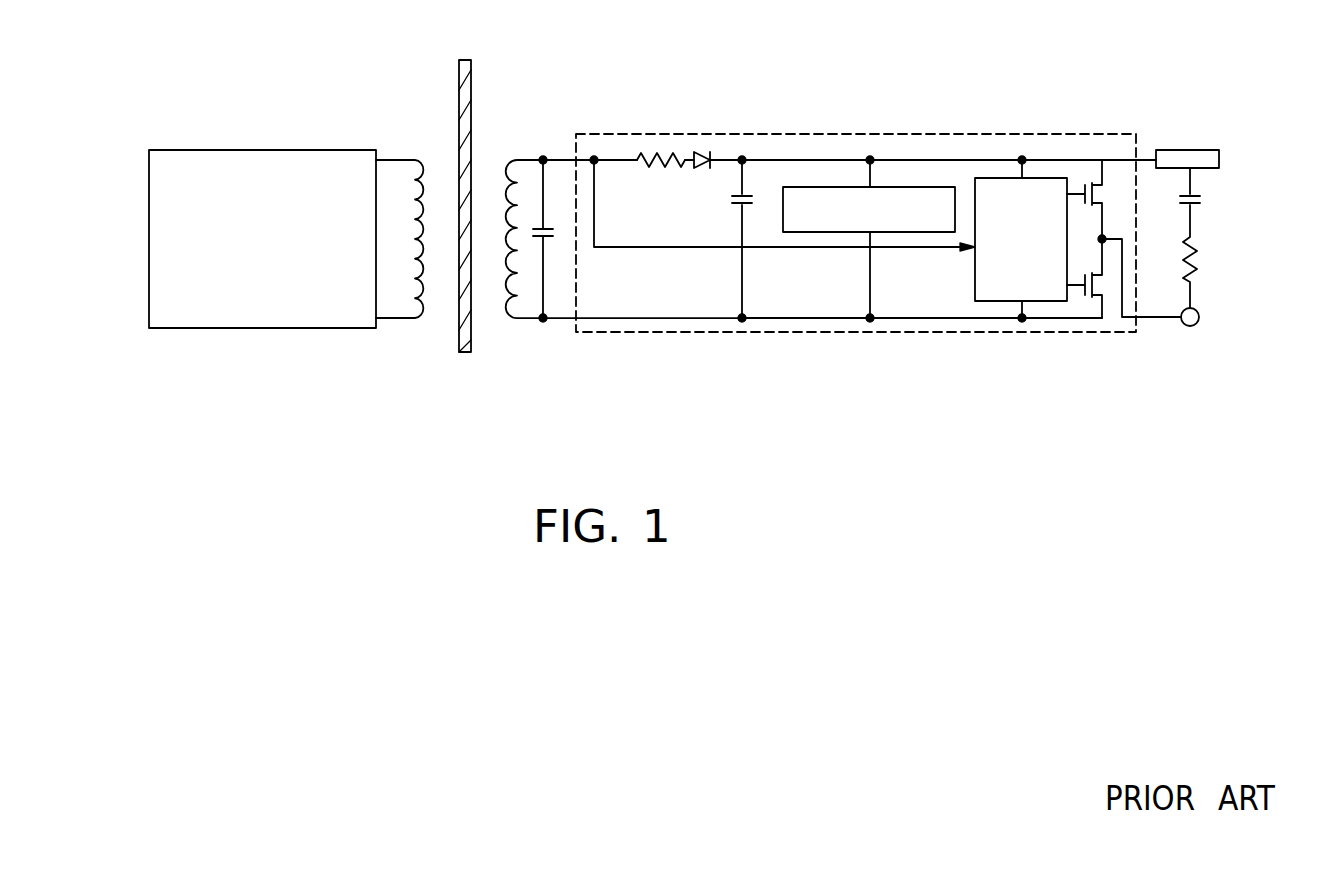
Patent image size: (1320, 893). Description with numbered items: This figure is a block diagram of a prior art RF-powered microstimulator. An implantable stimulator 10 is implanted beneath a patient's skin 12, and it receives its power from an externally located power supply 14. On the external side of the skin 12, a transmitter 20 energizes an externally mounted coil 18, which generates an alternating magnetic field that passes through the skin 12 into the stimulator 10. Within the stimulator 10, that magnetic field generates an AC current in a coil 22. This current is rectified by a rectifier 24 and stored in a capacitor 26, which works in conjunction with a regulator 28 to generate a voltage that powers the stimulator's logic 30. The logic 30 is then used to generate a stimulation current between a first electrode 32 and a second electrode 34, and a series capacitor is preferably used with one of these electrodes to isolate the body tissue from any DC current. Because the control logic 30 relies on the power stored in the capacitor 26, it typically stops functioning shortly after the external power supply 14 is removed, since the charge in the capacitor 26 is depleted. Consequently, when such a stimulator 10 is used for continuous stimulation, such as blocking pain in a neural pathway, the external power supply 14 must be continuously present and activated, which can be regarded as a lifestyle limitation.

The implantable stimulator 10 is at (895, 227).
The skin 12 is at (503, 189).
The power supply 14 is at (303, 223).
The coil 18 is at (417, 297).
The transmitter 20 is at (262, 175).
The coil 22 is at (624, 276).
The rectifier 24 is at (722, 100).
The capacitor 26 is at (794, 186).
The regulator 28 is at (879, 191).
The logic 30 is at (1078, 206).
The electrode 32 is at (1220, 178).
The electrode 34 is at (1213, 373).